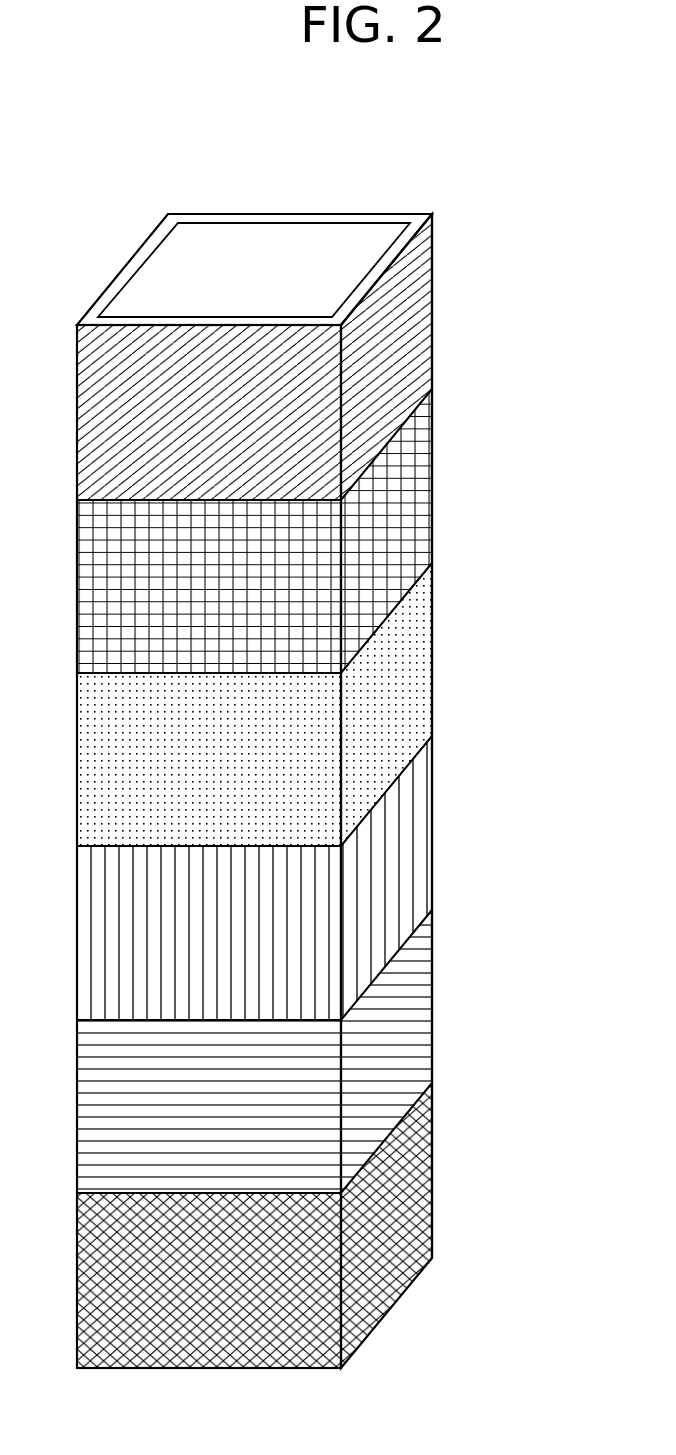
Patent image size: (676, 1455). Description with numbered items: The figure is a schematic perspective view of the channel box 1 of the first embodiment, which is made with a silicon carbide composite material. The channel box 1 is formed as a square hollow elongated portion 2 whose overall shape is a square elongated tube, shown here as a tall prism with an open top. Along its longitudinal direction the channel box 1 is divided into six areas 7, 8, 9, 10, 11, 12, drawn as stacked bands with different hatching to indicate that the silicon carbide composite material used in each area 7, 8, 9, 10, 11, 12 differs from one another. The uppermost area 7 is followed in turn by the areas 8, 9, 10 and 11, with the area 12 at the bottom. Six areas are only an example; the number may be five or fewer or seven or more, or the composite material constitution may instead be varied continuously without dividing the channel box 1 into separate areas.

The channel box 1 is at (457, 163).
The square hollow elongated portion 2 is at (436, 539).
The area 7 is at (415, 312).
The area 8 is at (415, 466).
The area 9 is at (415, 645).
The area 10 is at (415, 807).
The area 11 is at (415, 990).
The area 12 is at (415, 1145).